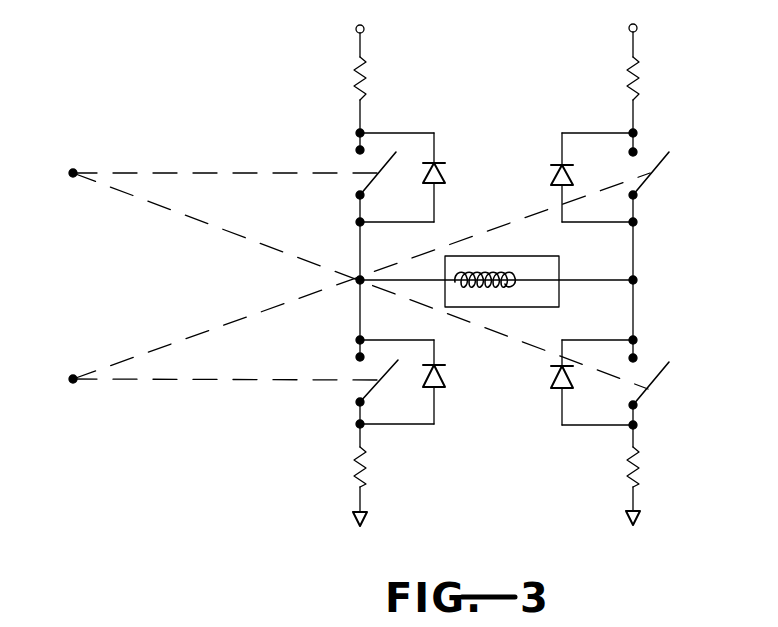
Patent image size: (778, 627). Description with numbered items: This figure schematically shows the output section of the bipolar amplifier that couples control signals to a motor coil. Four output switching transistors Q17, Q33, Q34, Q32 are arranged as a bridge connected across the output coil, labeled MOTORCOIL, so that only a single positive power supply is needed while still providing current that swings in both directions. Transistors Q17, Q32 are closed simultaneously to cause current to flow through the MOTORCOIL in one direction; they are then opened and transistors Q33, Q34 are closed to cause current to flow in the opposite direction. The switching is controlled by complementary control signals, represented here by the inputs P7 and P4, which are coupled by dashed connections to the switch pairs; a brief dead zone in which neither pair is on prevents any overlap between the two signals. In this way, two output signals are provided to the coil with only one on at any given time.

The transistor Q17 is at (348, 172).
The transistor Q33 is at (679, 172).
The transistor Q34 is at (347, 379).
The transistor Q32 is at (679, 381).
The control signal terminal P7 is at (339, 275).
The control signal terminal P4 is at (340, 282).
The motor coil MOTORCOIL is at (496, 293).